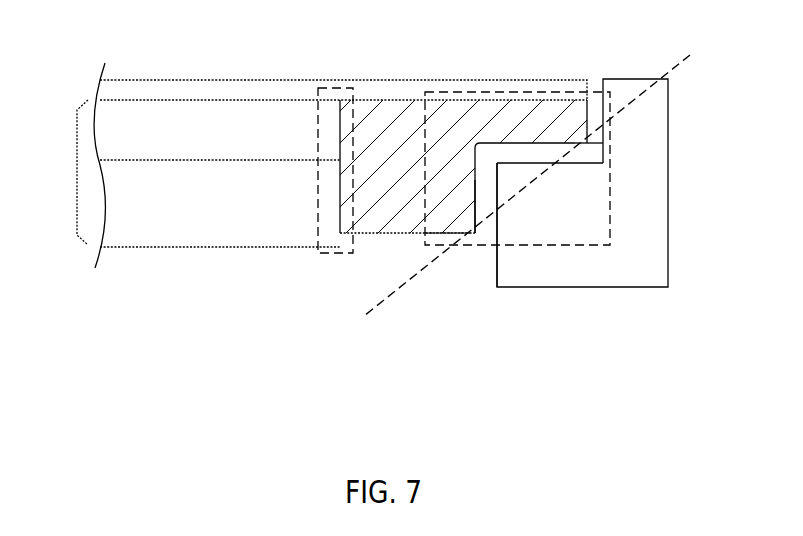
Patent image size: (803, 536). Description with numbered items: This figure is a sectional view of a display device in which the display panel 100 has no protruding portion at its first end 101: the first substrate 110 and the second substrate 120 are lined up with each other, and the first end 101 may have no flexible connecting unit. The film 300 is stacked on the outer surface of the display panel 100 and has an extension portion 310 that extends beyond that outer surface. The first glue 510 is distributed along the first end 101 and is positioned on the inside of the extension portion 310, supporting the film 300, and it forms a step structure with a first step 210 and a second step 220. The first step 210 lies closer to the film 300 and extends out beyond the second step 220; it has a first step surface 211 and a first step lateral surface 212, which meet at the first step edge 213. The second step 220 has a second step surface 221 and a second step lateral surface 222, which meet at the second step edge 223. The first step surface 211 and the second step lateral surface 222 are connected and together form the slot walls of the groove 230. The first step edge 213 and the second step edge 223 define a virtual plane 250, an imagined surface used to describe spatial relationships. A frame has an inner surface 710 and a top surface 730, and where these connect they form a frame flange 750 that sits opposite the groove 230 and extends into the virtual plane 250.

The display panel 100 is at (59, 172).
The first substrate 110 is at (177, 238).
The second substrate 120 is at (177, 152).
The film 300 is at (170, 93).
The first end 101 is at (317, 112).
The extension portion 310 is at (385, 97).
The first glue 510 is at (360, 175).
The first step 210 is at (542, 125).
The first step lateral surface 212 is at (587, 120).
The first step edge 213 is at (583, 142).
The first step surface 211 is at (556, 143).
The groove 230 is at (499, 150).
The second step 220 is at (437, 213).
The second step surface 221 is at (442, 235).
The second step edge 223 is at (475, 233).
The second step lateral surface 222 is at (475, 192).
The top surface 730 is at (542, 163).
The frame flange 750 is at (497, 163).
The inner surface 710 is at (497, 257).
The virtual plane 250 is at (543, 170).